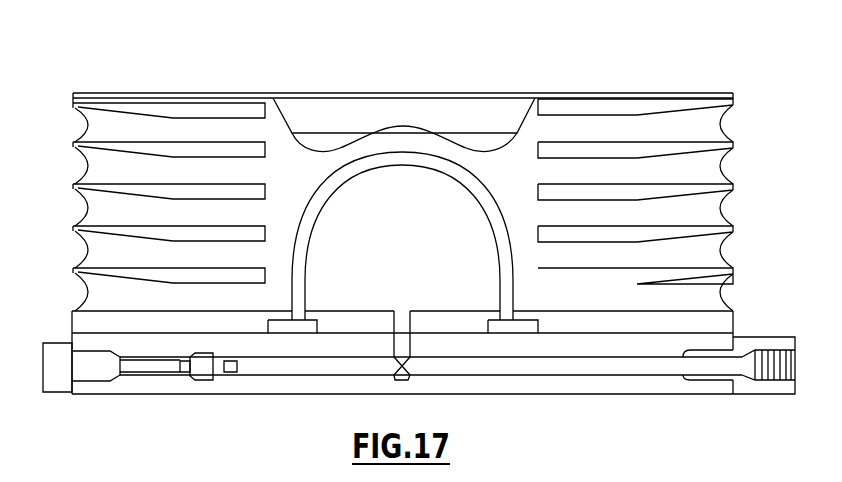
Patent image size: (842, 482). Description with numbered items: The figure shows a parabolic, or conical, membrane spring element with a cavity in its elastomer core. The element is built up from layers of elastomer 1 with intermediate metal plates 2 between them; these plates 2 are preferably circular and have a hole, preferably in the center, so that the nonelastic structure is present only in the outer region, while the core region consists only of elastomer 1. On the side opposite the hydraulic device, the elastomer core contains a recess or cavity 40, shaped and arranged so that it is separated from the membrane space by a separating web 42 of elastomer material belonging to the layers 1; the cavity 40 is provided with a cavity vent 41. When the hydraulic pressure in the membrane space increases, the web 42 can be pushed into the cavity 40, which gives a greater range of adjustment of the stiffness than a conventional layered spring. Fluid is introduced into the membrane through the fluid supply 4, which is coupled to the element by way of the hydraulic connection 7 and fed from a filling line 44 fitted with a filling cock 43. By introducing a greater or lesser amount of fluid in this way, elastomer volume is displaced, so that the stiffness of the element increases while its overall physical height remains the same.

The elastomer 1 is at (405, 199).
The intermediate metal plates 2 is at (75, 107).
The fluid supply 4 is at (517, 366).
The hydraulic connection 7 is at (764, 388).
The cavity for volume increase 40 is at (334, 130).
The cavity vent 41 is at (414, 88).
The separating web 42 is at (438, 148).
The filling cock 43 is at (212, 380).
The filling line 44 is at (55, 385).